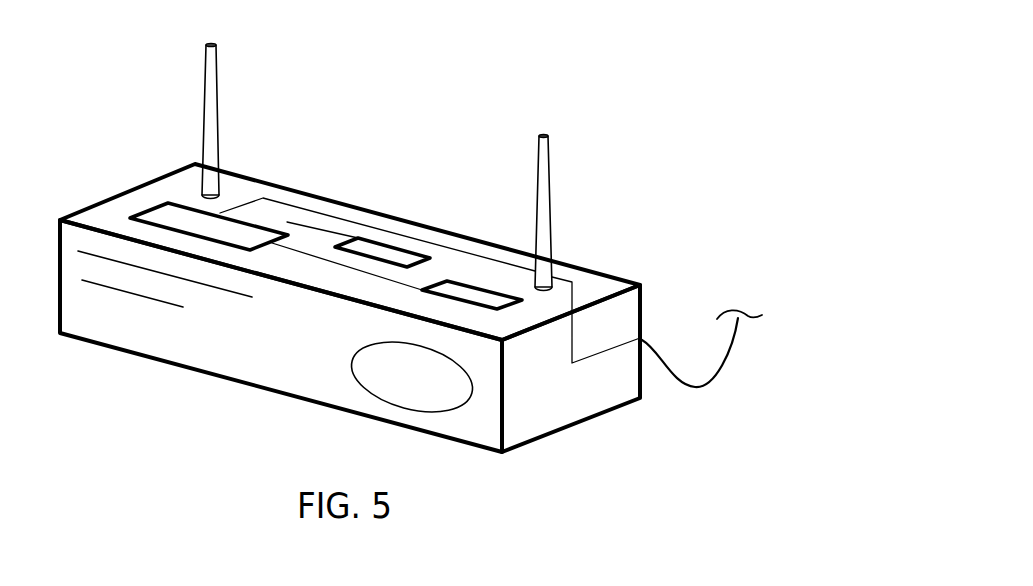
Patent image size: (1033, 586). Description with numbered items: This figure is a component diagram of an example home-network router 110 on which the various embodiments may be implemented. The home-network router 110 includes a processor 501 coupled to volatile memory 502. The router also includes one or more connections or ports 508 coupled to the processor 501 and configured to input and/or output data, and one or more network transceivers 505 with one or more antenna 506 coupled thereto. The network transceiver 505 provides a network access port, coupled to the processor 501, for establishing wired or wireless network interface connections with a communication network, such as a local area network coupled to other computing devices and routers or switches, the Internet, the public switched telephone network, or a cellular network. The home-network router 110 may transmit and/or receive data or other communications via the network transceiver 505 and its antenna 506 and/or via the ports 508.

The home-network router 110 is at (730, 134).
The processor 501 is at (250, 233).
The volatile memory 502 is at (373, 253).
The network transceiver 505 is at (495, 292).
The antenna 506 is at (212, 148).
The port 508 is at (695, 387).